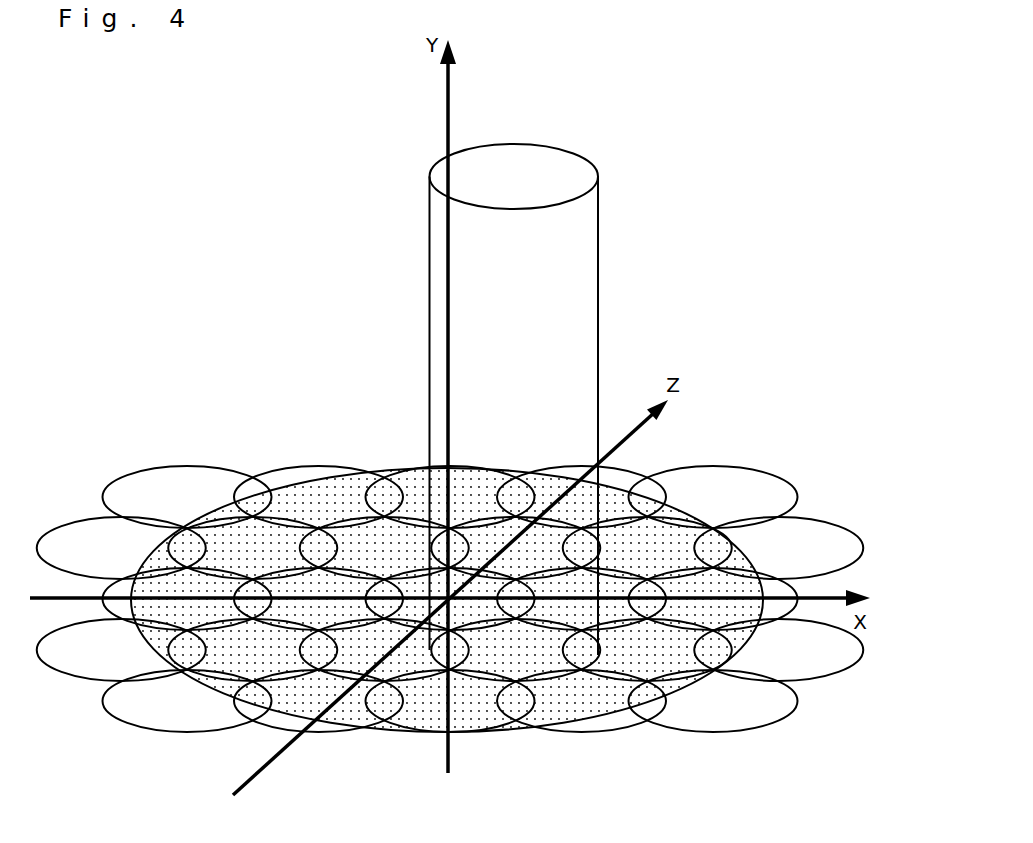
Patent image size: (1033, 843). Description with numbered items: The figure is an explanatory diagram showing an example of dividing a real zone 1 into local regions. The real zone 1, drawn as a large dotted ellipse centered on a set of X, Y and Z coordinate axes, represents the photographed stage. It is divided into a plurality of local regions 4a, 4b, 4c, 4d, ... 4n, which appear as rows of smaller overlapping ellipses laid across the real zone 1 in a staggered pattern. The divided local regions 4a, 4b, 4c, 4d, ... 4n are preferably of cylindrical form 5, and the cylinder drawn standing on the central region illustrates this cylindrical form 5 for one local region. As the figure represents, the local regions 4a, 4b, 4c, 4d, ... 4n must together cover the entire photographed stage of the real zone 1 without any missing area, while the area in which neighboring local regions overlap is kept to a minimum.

The real zone 1 is at (393, 466).
The local region 4a is at (315, 490).
The local region 4b is at (468, 488).
The local region 4c is at (545, 490).
The local region 4d is at (737, 498).
The local region 4n is at (295, 608).
The cylindrical form 5 is at (600, 347).